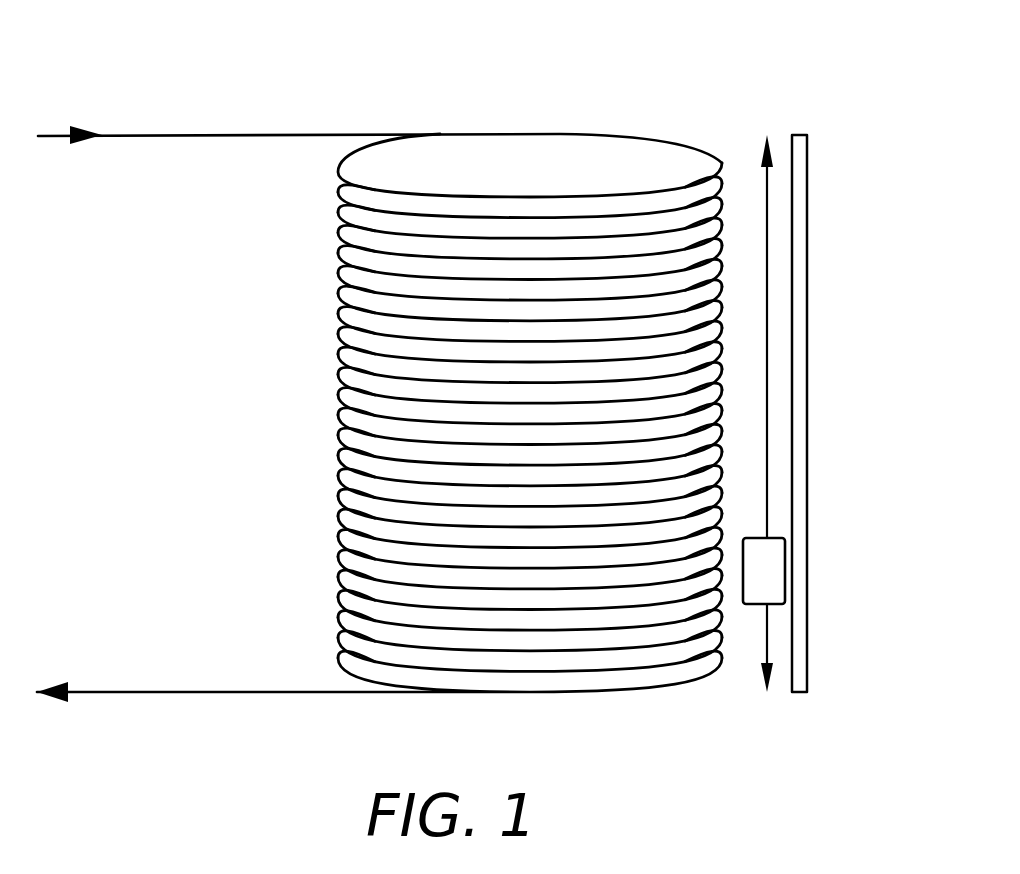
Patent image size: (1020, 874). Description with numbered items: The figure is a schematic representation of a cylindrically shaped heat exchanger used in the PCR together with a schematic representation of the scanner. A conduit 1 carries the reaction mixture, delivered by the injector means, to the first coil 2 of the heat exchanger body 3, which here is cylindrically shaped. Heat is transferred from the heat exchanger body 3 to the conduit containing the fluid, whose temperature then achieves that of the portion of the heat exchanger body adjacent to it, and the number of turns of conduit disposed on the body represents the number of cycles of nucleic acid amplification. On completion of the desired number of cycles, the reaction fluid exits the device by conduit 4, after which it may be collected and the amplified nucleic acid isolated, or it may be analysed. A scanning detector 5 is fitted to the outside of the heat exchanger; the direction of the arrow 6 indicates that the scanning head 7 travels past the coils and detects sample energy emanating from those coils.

The conduit 1 is at (187, 135).
The first coil 2 is at (563, 353).
The heat exchanger body 3 is at (613, 153).
The conduit 4 is at (163, 692).
The scanning detector 5 is at (852, 206).
The arrow 6 is at (768, 312).
The scanning head 7 is at (780, 562).